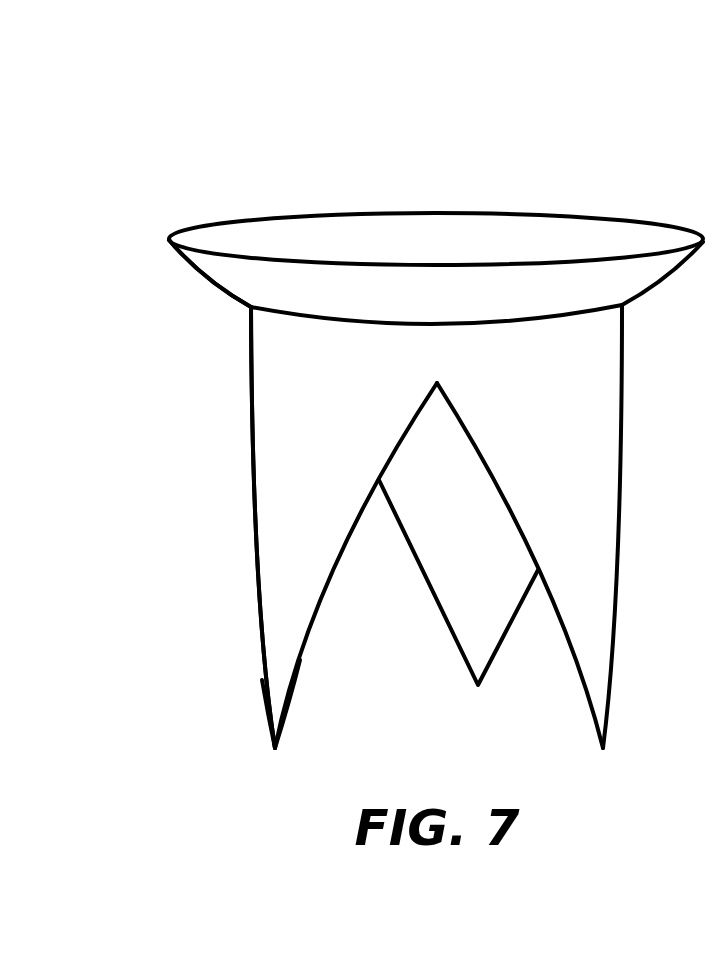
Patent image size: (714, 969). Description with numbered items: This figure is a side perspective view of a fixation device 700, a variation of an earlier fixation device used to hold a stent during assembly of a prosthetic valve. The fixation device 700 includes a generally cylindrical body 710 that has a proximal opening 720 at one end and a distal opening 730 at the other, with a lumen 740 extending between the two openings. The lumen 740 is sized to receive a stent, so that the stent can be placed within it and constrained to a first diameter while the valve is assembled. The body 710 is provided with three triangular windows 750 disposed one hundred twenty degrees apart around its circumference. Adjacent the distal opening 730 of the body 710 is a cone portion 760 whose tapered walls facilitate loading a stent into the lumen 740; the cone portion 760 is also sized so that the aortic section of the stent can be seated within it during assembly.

The fixation device 700 is at (232, 453).
The body 710 is at (278, 331).
The proximal opening 720 is at (309, 737).
The distal opening 730 is at (536, 172).
The lumen 740 is at (340, 203).
The triangular windows 750 is at (567, 647).
The cone portion 760 is at (192, 267).